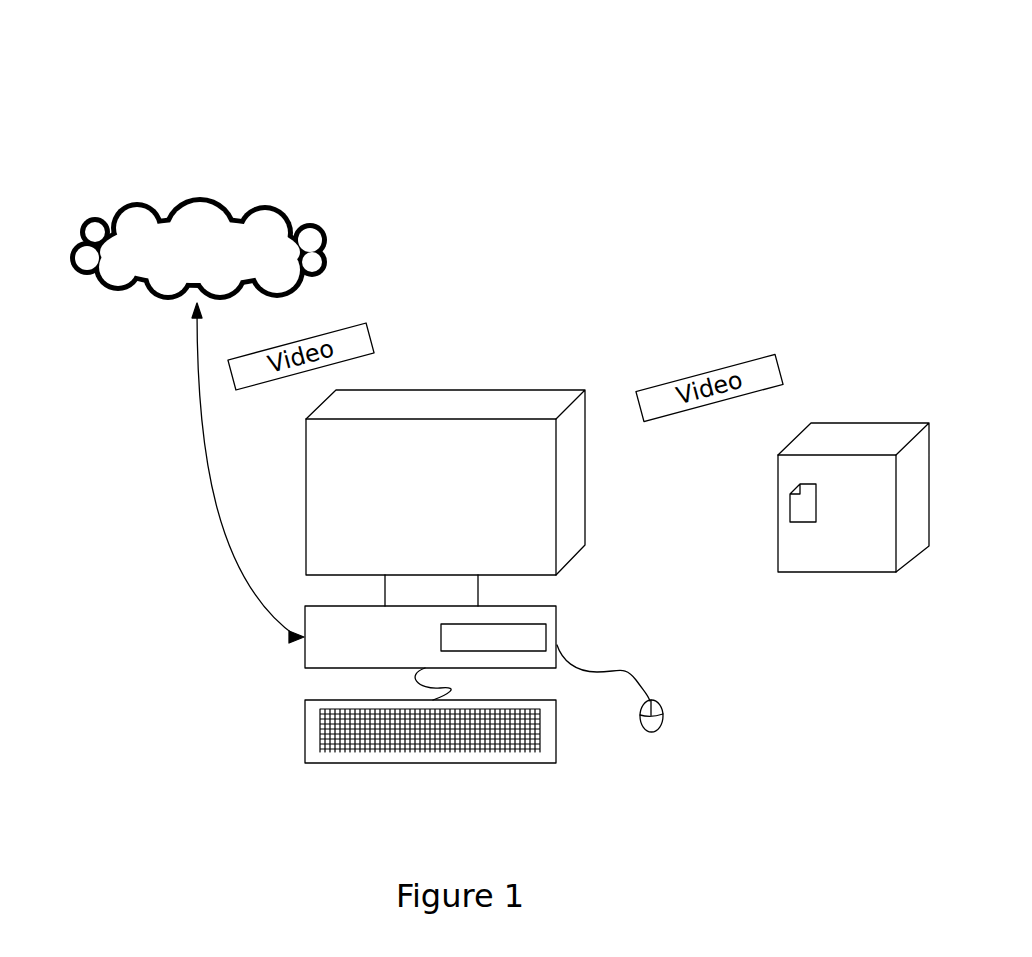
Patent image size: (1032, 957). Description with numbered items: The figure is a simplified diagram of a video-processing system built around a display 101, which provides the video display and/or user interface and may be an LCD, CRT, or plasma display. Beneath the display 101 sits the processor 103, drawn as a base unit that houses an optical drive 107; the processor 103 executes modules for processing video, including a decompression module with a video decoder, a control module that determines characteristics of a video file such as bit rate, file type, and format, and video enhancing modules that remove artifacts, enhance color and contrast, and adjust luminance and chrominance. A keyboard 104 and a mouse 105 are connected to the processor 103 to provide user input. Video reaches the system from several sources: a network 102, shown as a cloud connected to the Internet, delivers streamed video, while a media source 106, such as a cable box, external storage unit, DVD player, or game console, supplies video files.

The display 101 is at (417, 389).
The network 102 is at (327, 232).
The processor 103 is at (540, 606).
The keyboard 104 is at (503, 763).
The mouse 105 is at (652, 732).
The media source 106 is at (828, 572).
The optical drive 107 is at (532, 641).